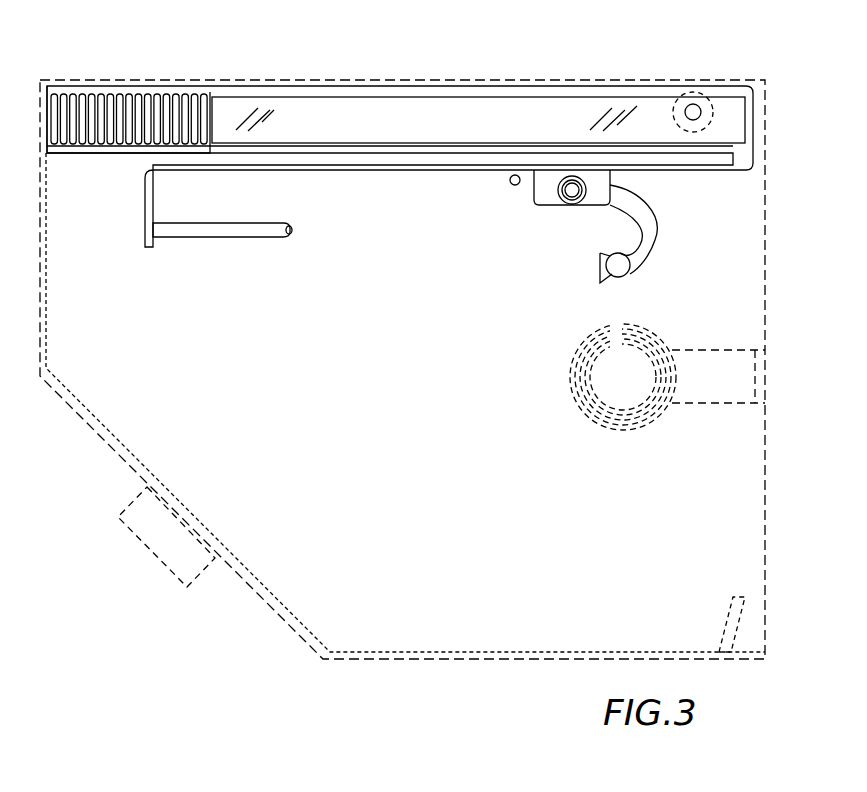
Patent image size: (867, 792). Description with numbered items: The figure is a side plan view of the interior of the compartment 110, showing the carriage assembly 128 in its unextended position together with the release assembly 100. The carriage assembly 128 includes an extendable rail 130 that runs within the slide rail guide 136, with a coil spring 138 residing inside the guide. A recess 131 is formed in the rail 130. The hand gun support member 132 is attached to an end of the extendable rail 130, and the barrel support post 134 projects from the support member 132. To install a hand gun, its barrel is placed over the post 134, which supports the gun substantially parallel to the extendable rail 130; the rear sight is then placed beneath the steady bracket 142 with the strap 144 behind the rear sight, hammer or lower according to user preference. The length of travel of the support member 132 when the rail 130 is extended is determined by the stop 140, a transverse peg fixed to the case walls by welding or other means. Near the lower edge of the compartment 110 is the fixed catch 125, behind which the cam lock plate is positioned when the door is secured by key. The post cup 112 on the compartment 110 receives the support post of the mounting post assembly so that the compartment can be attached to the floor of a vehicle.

The release assembly 100 is at (262, 48).
The compartment 110 is at (546, 658).
The post cup 112 is at (185, 590).
The fixed catch 125 is at (735, 605).
The carriage assembly 128 is at (392, 262).
The rail 130 is at (457, 105).
The recess 131 is at (692, 104).
The support member 132 is at (457, 170).
The barrel support post 134 is at (292, 233).
The slide rail guide 136 is at (133, 150).
The spring 138 is at (110, 112).
The stop 140 is at (516, 186).
The bracket 142 is at (568, 206).
The strap 144 is at (655, 245).